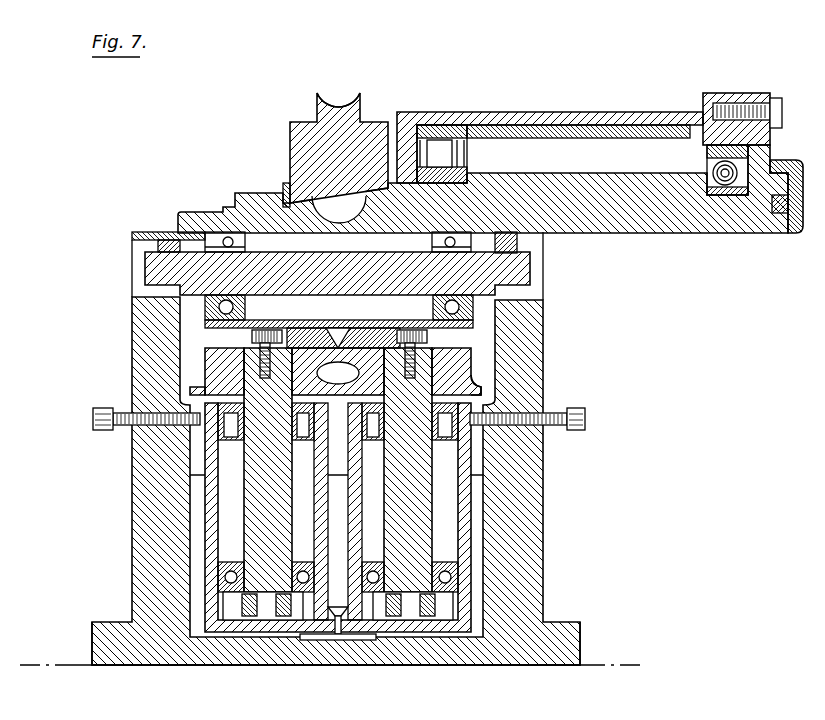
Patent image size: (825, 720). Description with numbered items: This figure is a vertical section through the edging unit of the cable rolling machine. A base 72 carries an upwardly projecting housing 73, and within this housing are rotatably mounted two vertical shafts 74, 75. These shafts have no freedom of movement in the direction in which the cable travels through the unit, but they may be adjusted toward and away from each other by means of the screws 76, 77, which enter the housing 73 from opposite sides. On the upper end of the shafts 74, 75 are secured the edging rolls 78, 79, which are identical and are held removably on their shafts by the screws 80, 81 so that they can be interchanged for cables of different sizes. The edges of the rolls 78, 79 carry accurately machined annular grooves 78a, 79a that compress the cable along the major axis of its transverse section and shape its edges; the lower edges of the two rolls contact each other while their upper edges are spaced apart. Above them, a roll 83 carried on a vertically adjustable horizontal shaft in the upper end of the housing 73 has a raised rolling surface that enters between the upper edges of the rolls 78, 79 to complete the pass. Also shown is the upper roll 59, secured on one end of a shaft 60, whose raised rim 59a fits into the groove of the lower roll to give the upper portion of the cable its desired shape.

The upper roll 59 is at (302, 122).
The raised rim 59a is at (339, 107).
The shaft 60 is at (566, 173).
The base 72 is at (582, 640).
The housing 73 is at (130, 574).
The vertical shaft 74 is at (238, 498).
The vertical shaft 75 is at (383, 497).
The screw 76 is at (101, 408).
The screw 77 is at (575, 408).
The edging roll 78 is at (210, 358).
The annular groove 78a is at (216, 372).
The edging roll 79 is at (460, 350).
The annular groove 79a is at (463, 373).
The screw 80 is at (266, 330).
The screw 81 is at (410, 330).
The roll 83 is at (338, 333).